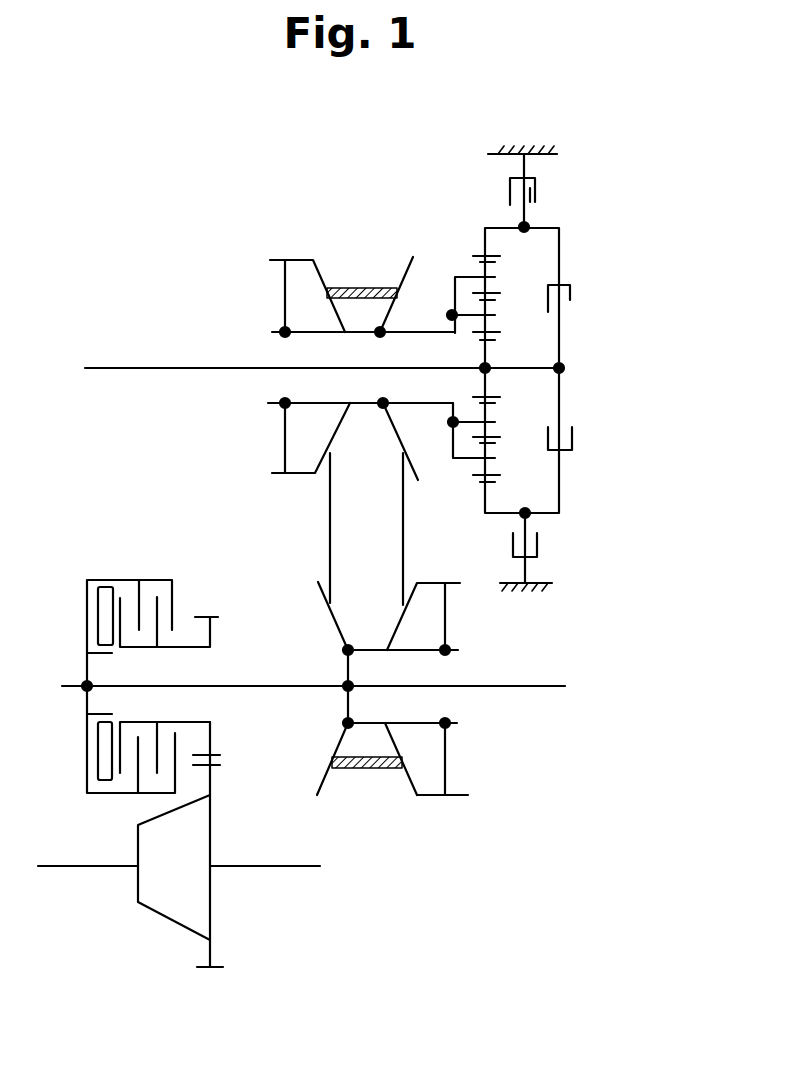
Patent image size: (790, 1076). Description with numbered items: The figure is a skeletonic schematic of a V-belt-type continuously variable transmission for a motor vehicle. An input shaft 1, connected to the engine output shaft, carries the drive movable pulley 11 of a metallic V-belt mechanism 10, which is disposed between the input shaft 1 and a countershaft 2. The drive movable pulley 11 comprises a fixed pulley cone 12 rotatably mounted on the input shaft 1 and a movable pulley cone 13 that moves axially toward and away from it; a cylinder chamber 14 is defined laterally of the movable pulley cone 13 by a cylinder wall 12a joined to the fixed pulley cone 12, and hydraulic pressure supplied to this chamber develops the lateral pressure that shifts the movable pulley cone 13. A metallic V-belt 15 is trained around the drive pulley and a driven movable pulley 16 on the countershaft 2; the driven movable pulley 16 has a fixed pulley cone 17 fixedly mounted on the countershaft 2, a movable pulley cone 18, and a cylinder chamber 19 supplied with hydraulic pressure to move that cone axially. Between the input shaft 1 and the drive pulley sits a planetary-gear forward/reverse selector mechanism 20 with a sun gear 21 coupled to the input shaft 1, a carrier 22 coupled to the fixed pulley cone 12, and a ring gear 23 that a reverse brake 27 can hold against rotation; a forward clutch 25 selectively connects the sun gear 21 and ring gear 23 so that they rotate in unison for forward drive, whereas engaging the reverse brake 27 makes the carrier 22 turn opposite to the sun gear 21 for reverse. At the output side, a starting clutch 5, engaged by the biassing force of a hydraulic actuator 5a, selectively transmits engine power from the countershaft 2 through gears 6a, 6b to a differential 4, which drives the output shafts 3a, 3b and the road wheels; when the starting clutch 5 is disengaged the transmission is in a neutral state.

The input shaft 1 is at (141, 368).
The countershaft 2 is at (259, 688).
The output shaft 3a is at (280, 870).
The output shaft 3b is at (62, 870).
The differential 4 is at (173, 902).
The starting clutch 5 is at (127, 580).
The hydraulic actuator 5a is at (87, 605).
The gear 6a is at (207, 617).
The gear 6b is at (210, 972).
The metallic V-belt mechanism 10 is at (232, 457).
The drive movable pulley 11 is at (328, 258).
The fixed pulley cone 12 is at (406, 282).
The cylinder wall 12a is at (280, 315).
The movable pulley cone 13 is at (299, 258).
The cylinder chamber 14 is at (302, 297).
The metallic V-belt 15 is at (330, 514).
The driven movable pulley 16 is at (492, 744).
The fixed pulley cone 17 is at (318, 592).
The movable pulley cone 18 is at (434, 583).
The cylinder chamber 19 is at (430, 627).
The planetary-gear forward/reverse selector mechanism 20 is at (534, 368).
The sun gear 21 is at (487, 353).
The carrier 22 is at (462, 276).
The ring gear 23 is at (485, 245).
The forward clutch 25 is at (572, 298).
The reverse brake 27 is at (537, 188).